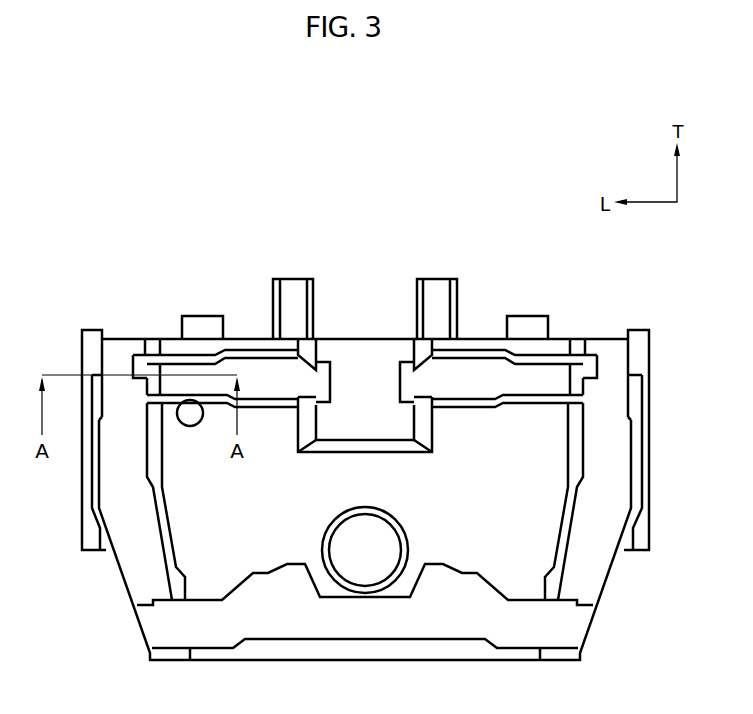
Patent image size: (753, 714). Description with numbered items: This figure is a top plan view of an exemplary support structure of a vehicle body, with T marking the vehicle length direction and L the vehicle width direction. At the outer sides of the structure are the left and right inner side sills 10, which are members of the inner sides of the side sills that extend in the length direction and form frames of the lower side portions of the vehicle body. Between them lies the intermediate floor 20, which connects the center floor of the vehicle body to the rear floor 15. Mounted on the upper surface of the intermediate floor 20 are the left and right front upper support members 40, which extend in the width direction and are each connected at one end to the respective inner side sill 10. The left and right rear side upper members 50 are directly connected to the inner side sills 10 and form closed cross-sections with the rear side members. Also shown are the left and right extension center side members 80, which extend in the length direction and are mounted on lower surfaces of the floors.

The inner side sill 10 is at (82, 500).
The rear floor 15 is at (197, 542).
The intermediate floor 20 is at (362, 352).
The front upper support member 40 is at (238, 370).
The rear side upper member 50 is at (117, 523).
The extension center side member 80 is at (203, 317).